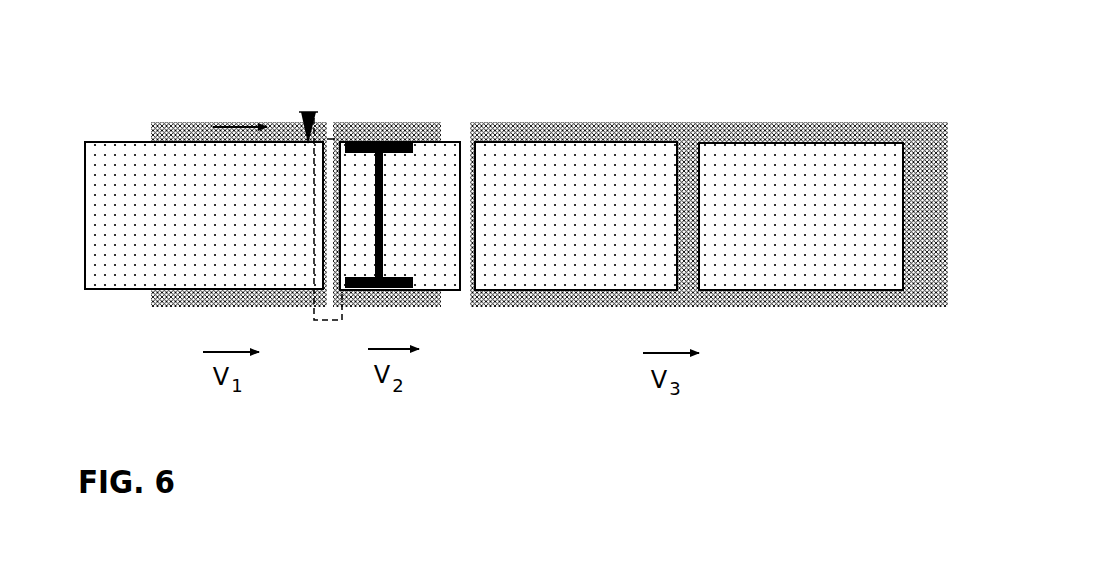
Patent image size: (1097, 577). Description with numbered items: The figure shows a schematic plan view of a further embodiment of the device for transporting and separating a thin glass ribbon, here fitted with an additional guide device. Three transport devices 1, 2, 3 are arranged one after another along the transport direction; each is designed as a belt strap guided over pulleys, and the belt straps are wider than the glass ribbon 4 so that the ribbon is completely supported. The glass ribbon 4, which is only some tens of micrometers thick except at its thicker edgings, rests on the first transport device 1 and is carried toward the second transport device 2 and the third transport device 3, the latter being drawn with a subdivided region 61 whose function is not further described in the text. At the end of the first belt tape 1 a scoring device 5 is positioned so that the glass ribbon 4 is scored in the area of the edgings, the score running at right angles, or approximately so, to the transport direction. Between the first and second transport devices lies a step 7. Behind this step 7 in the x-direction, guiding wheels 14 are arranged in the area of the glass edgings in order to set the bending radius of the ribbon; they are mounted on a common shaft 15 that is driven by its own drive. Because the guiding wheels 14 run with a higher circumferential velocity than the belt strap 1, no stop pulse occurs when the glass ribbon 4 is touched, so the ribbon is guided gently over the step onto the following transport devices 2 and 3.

The first transport device 1 is at (275, 122).
The second transport device 2 is at (428, 123).
The third transport device 3 is at (572, 122).
The glass ribbon 4 is at (98, 223).
The scoring device 5 is at (308, 110).
The step 7 is at (325, 322).
The guiding wheels 14 is at (362, 137).
The common shaft 15 is at (438, 292).
The first cavity of third carrier 61 is at (622, 147).